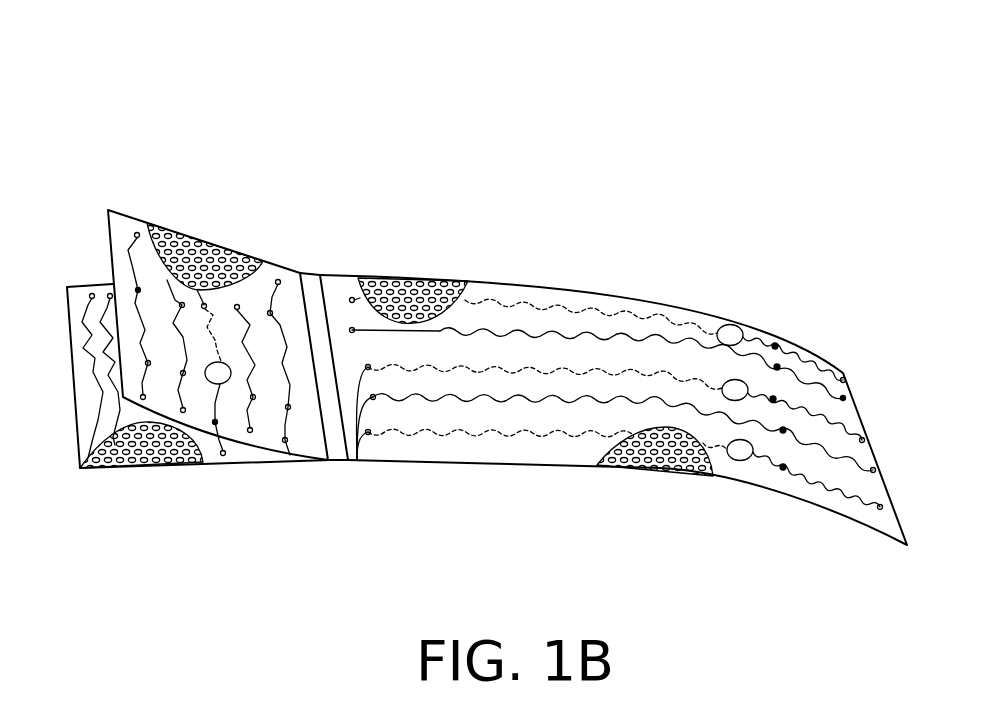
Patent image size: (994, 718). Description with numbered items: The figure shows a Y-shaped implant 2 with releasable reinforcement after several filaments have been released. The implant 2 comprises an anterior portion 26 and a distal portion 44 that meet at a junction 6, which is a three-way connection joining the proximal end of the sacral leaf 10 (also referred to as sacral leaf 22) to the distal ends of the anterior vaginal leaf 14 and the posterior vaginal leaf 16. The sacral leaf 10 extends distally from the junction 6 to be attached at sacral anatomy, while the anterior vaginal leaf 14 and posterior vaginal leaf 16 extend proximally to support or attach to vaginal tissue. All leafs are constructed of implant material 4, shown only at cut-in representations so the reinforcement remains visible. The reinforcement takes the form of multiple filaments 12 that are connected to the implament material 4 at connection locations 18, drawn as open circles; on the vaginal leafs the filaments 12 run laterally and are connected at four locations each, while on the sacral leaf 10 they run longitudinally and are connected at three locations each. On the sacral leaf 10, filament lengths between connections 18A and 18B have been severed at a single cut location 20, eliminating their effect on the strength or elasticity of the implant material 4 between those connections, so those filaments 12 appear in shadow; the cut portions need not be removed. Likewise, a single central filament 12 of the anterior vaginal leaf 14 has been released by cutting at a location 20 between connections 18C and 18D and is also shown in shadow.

The implant 2 is at (310, 577).
The implant material 4 is at (193, 242).
The junction 6 is at (315, 273).
The sacral leaf 10 is at (607, 307).
The releasable reinforcement filament 12 is at (803, 362).
The anterior vaginal leaf 14 is at (268, 266).
The posterior vaginal leaf 16 is at (77, 374).
The connection location 18 is at (139, 221).
The first connection of sacral leaf filament 18A is at (352, 297).
The second connection of sacral leaf filament 18B is at (774, 398).
The first connection of central vaginal leaf filament 18C is at (215, 404).
The second connection of central vaginal leaf filament 18D is at (227, 268).
The cut location 20 is at (750, 440).
The sacral leaf 22 is at (222, 386).
The anterior portion 26 is at (133, 88).
The distal portion 44 is at (784, 192).